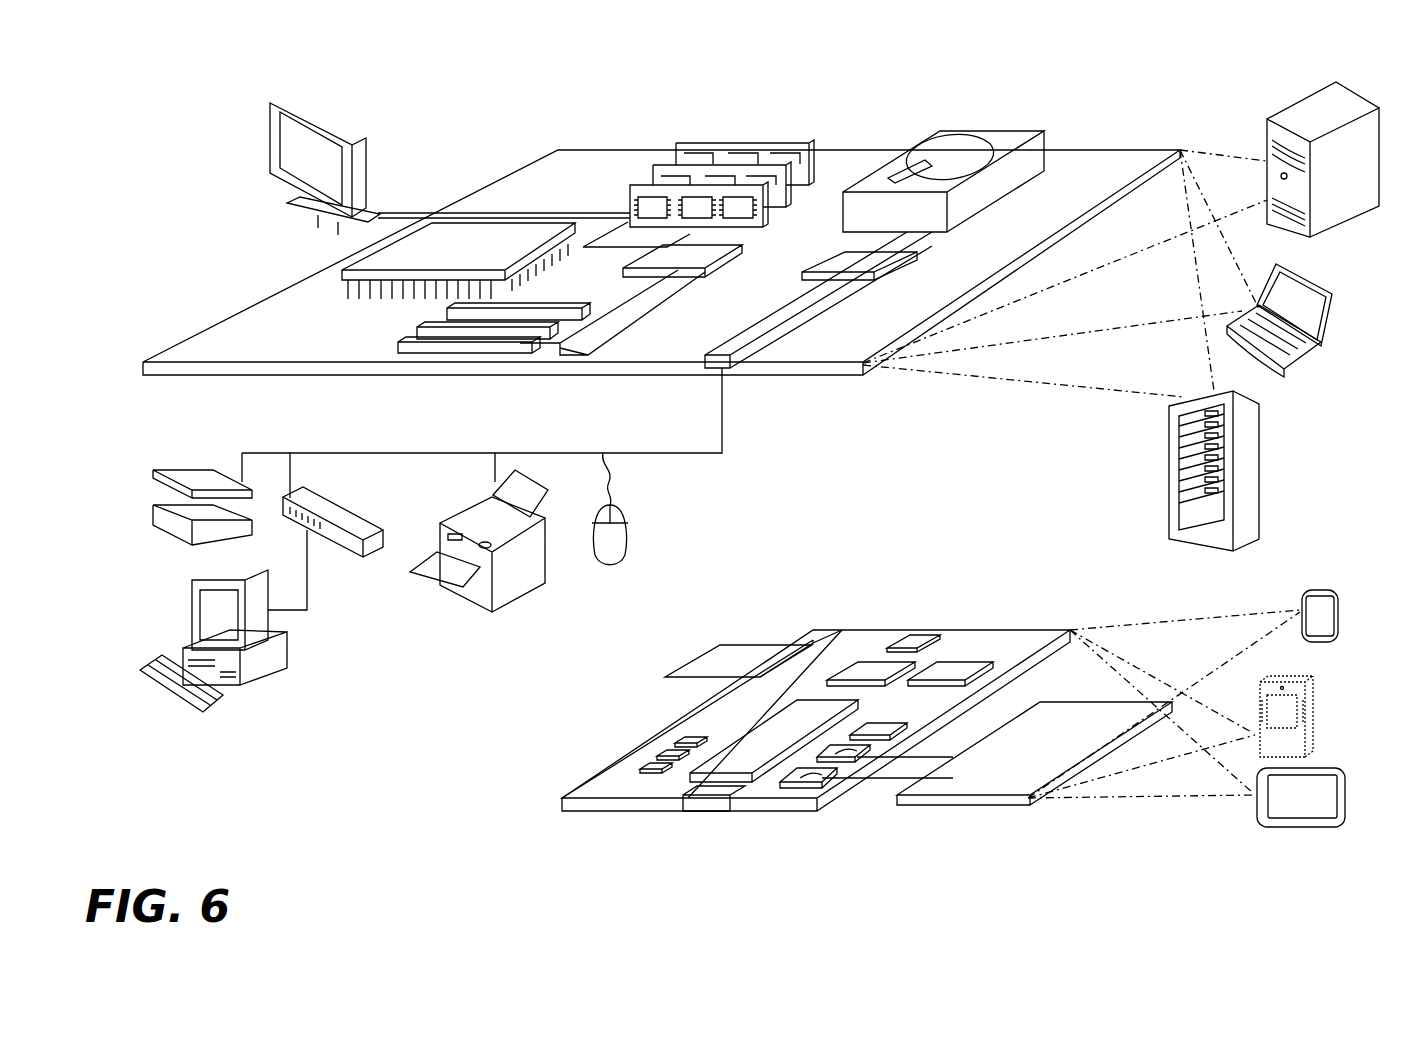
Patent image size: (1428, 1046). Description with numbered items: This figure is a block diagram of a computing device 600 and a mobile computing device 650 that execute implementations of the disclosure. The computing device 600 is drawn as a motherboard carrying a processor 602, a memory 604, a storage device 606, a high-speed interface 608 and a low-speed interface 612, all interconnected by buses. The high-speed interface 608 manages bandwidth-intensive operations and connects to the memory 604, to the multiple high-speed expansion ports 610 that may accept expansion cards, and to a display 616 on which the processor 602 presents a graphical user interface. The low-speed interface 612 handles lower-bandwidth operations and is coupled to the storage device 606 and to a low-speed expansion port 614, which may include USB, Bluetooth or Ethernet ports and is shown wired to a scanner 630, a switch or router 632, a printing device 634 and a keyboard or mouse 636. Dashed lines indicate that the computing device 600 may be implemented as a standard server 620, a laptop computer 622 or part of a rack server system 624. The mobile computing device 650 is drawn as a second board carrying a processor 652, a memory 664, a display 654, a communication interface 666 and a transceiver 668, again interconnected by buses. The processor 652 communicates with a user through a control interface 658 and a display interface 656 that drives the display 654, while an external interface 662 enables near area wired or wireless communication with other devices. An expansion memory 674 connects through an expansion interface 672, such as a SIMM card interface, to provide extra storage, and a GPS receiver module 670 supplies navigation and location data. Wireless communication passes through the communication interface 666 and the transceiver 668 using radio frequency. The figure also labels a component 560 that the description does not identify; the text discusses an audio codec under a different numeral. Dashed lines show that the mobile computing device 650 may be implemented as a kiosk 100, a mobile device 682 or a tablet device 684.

The computing device 600 is at (236, 34).
The processor 602 is at (340, 268).
The memory 604 is at (707, 140).
The storage device 606 is at (990, 122).
The high-speed interface 608 is at (668, 257).
The high-speed expansion ports 610 is at (400, 338).
The low-speed interface 612 is at (848, 255).
The low-speed expansion port 614 is at (733, 368).
The display 616 is at (279, 100).
The standard server 620 is at (1265, 129).
The laptop computer 622 is at (1317, 275).
The rack server system 624 is at (1169, 470).
The scanner 630 is at (188, 467).
The switch or router 632 is at (348, 557).
The printing device 634 is at (522, 597).
The keyboard or mouse 636 is at (633, 550).
The mobile computing device 650 is at (535, 841).
The processor 652 is at (772, 750).
The display 654 is at (1090, 723).
The memory 560 is at (877, 727).
The display interface 656 is at (826, 775).
The control interface 658 is at (858, 755).
The external interface 662 is at (703, 806).
The memory 664 is at (655, 760).
The communication interface 666 is at (882, 668).
The transceiver 668 is at (960, 668).
The GPS receiver module 670 is at (917, 632).
The expansion interface 672 is at (807, 642).
The expansion memory 674 is at (720, 645).
The mobile device 682 is at (1318, 590).
The kiosk 100 is at (1312, 690).
The tablet device 684 is at (1346, 796).